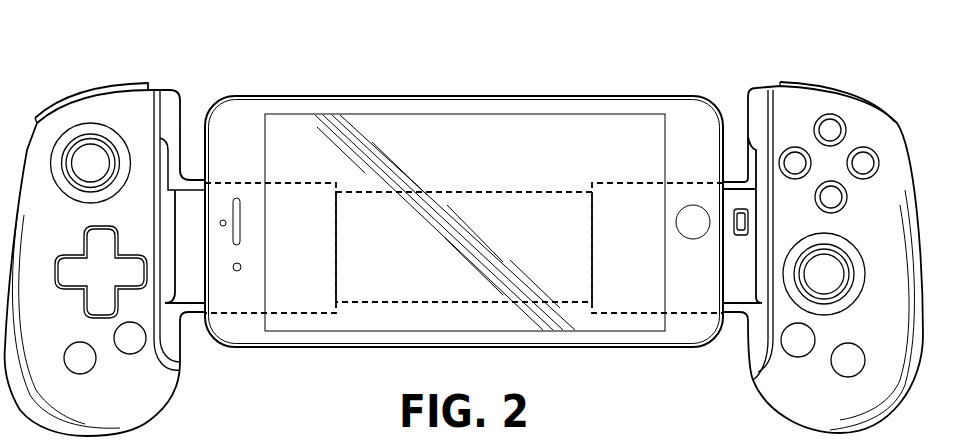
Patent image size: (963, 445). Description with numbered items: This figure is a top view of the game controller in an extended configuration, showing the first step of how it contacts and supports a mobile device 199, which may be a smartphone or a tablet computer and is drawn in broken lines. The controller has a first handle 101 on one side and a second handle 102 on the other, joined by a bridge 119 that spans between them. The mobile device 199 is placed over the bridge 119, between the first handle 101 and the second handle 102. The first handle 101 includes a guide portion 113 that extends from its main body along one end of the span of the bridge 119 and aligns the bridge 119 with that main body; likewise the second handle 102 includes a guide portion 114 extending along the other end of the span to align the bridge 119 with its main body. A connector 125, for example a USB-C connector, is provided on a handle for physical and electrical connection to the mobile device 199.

The first handle 101 is at (66, 84).
The second handle 102 is at (867, 85).
The mobile device 199 is at (545, 96).
The guide portion 113 is at (296, 182).
The guide portion 114 is at (636, 182).
The bridge 119 is at (466, 191).
The connector 125 is at (741, 238).